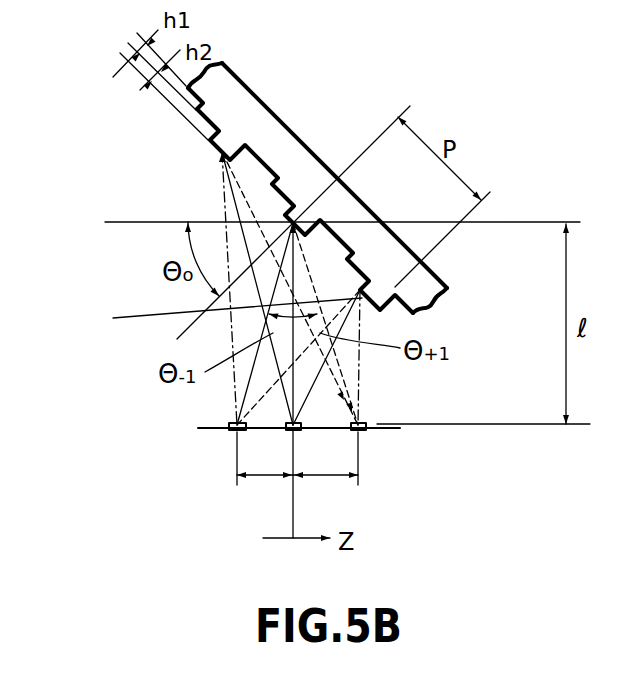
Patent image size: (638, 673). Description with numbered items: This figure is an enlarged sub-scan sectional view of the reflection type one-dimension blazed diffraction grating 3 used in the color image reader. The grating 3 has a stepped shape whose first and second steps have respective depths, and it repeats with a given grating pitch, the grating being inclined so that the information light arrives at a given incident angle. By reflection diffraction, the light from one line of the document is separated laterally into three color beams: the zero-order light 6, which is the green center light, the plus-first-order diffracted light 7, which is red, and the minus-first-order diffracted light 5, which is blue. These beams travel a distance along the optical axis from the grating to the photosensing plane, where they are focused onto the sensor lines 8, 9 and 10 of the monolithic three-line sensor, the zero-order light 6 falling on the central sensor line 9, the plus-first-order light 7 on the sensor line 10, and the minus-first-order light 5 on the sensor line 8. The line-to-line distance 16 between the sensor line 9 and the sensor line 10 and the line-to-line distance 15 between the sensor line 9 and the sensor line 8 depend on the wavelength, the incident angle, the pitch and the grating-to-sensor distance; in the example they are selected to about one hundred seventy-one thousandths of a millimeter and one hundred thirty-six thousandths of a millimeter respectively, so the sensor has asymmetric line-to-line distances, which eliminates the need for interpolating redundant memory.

The reflection type one-dimension blazed diffraction grating 3 is at (267, 118).
The -1-order diffracted light 5 is at (237, 387).
The 0-order light 6 is at (298, 378).
The +1-order diffracted light 7 is at (350, 373).
The sensor line 8 is at (232, 432).
The sensor line 9 is at (297, 431).
The sensor line 10 is at (363, 430).
The line-to-line distance 15 is at (265, 461).
The line-to-line distance 16 is at (325, 461).